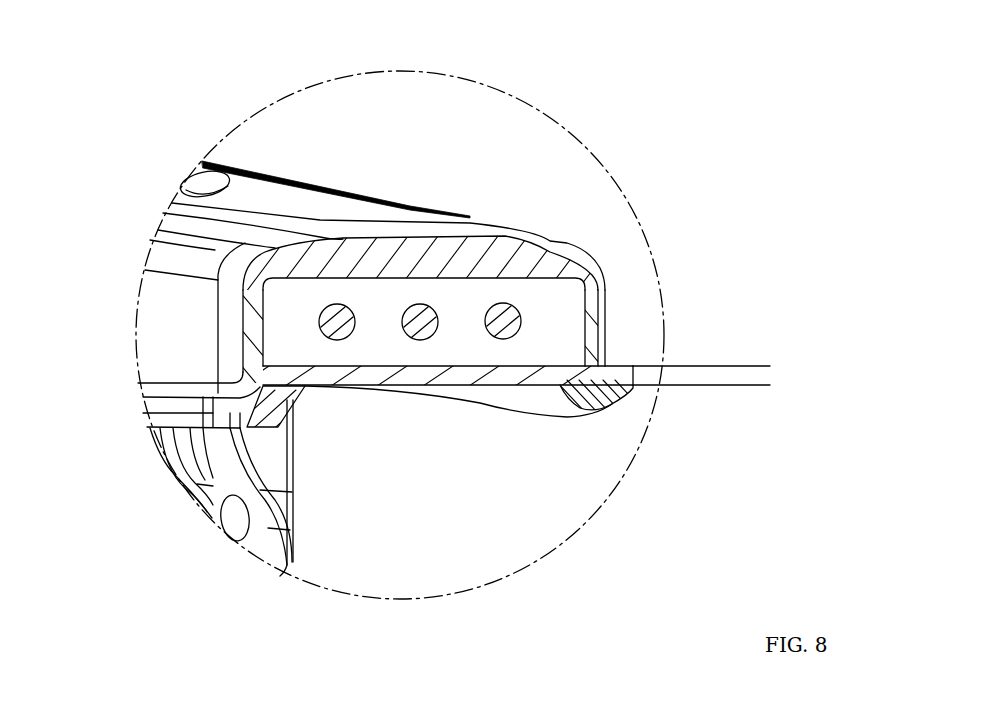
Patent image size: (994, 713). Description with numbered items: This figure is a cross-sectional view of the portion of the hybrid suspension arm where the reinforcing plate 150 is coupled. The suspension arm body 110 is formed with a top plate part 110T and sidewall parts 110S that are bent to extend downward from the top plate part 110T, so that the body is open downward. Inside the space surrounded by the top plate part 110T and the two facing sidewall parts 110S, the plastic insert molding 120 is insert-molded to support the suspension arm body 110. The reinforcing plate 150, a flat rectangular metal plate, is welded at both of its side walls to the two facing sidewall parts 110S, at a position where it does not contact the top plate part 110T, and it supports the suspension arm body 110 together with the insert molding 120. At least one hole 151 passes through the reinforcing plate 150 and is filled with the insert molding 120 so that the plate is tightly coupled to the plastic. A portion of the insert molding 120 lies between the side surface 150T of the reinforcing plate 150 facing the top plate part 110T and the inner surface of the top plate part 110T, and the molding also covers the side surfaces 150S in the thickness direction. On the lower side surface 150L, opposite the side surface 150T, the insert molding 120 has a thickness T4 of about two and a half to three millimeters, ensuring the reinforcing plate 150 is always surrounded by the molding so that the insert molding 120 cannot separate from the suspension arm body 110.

The suspension arm body 110 is at (396, 302).
The top plate part 110T is at (448, 230).
The sidewall parts 110S is at (248, 332).
The plastic insert molding 120 is at (305, 402).
The reinforcing plate 150 is at (410, 336).
The side surface facing the top plate part 150T is at (393, 278).
The side surfaces in thickness direction 150S is at (530, 347).
The lower side surface 150L is at (473, 390).
The hole 151 is at (405, 350).
The thickness of the plastic insert molding on the lower side surface T4 is at (763, 342).